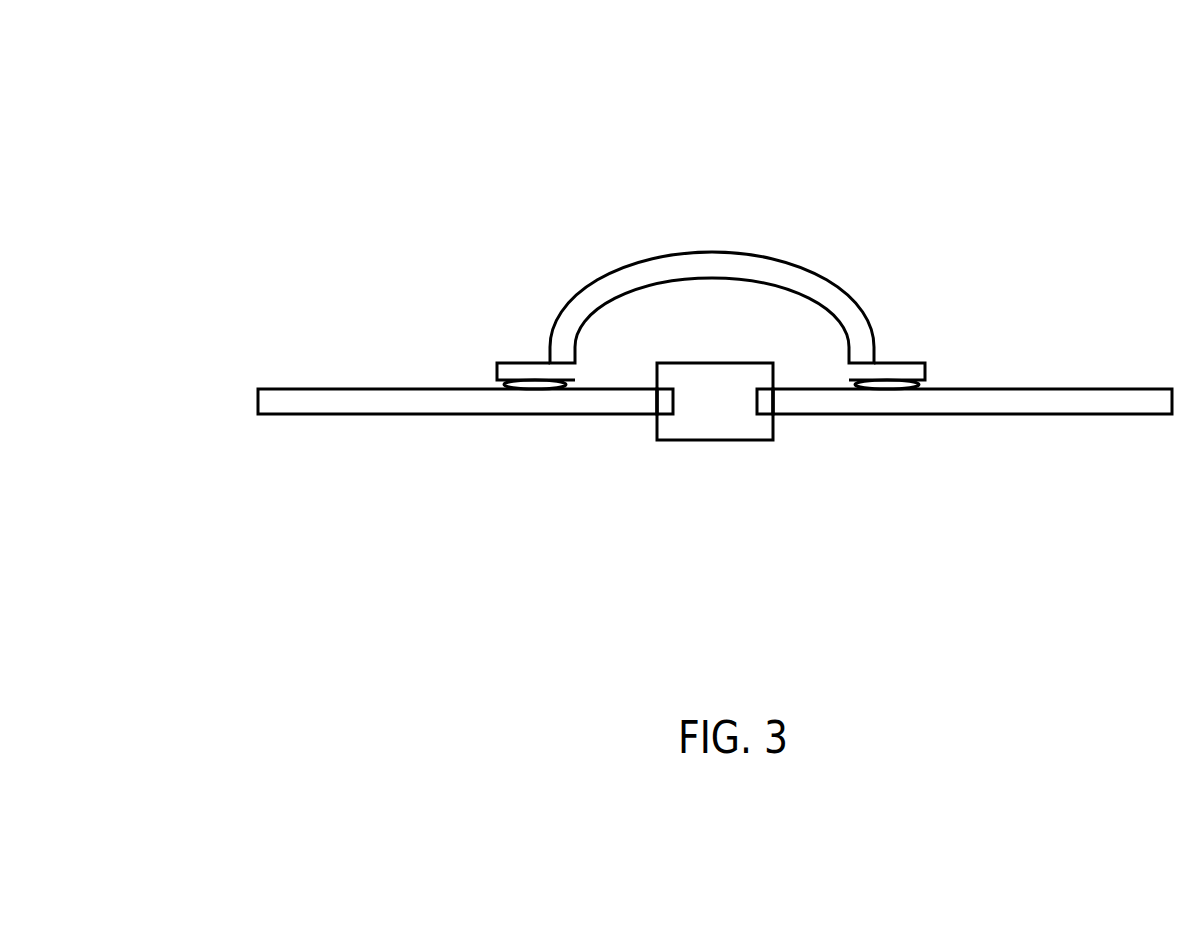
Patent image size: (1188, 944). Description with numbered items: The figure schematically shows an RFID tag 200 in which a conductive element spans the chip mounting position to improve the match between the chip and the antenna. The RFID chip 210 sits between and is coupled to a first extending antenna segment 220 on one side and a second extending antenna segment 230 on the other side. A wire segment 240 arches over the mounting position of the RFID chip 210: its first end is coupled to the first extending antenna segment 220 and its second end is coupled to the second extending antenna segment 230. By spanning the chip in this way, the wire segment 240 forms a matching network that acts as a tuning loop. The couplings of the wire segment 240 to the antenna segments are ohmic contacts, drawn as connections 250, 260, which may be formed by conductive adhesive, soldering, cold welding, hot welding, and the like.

The RFID tag 200 is at (463, 150).
The RFID chip 210 is at (710, 415).
The first extending antenna segment 220 is at (278, 400).
The second extending antenna segment 230 is at (1147, 403).
The wire segment 240 is at (775, 285).
The connection 250 is at (537, 383).
The connection 260 is at (888, 383).